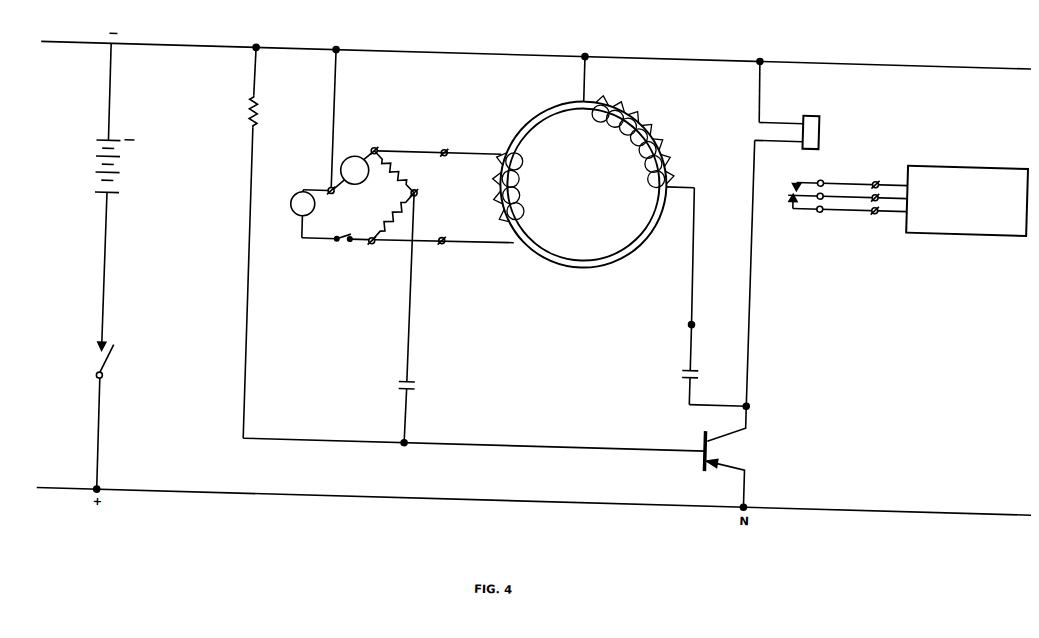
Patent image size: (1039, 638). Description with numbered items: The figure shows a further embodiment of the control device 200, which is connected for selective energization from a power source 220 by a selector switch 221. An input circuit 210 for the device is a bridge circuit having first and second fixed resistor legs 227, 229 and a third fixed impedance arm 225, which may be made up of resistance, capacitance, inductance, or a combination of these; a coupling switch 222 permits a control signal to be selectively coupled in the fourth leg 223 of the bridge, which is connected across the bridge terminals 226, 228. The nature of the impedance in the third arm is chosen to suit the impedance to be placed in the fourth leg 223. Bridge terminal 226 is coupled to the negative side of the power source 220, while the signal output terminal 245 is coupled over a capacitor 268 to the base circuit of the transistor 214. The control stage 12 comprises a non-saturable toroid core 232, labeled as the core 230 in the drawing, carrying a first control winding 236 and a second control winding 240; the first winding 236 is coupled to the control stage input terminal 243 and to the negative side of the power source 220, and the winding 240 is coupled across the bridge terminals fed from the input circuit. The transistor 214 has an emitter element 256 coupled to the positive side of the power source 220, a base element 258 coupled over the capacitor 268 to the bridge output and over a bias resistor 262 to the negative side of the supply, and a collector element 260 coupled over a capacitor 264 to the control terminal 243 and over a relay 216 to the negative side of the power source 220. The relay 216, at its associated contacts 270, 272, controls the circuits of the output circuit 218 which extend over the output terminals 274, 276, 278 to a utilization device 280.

The control device 200 is at (508, 47).
The control stage 12 is at (577, 162).
The input circuit 210 is at (388, 206).
The transistor unit 214 is at (770, 457).
The relay 216 is at (785, 234).
The output circuit 218 is at (893, 177).
The power source 220 is at (129, 126).
The selector switch 221 is at (241, 308).
The coupling switch 222 is at (343, 231).
The fourth leg 223 is at (288, 203).
The third fixed impedance arm 225 is at (353, 165).
The bridge terminal 226 is at (380, 161).
The first fixed resistor leg 227 is at (401, 172).
The bridge terminal 228 is at (406, 253).
The second fixed resistor leg 229 is at (391, 217).
The magnetic core 230 is at (568, 247).
The non-saturable toroid core 232 is at (650, 217).
The first control winding 236 is at (627, 135).
The second control winding 240 is at (519, 170).
The control stage input terminal 243 is at (705, 325).
The signal output terminal 245 is at (427, 190).
The emitter element 256 is at (723, 483).
The base element 258 is at (688, 450).
The collector element 260 is at (739, 425).
The bias resistor 262 is at (231, 242).
The capacitor 264 is at (677, 364).
The capacitor 268 is at (423, 318).
The relay contact 270 is at (834, 181).
The relay contact 272 is at (833, 203).
The output terminal 274 is at (886, 179).
The output terminal 276 is at (886, 192).
The output terminal 278 is at (886, 206).
The utilization device 280 is at (967, 201).